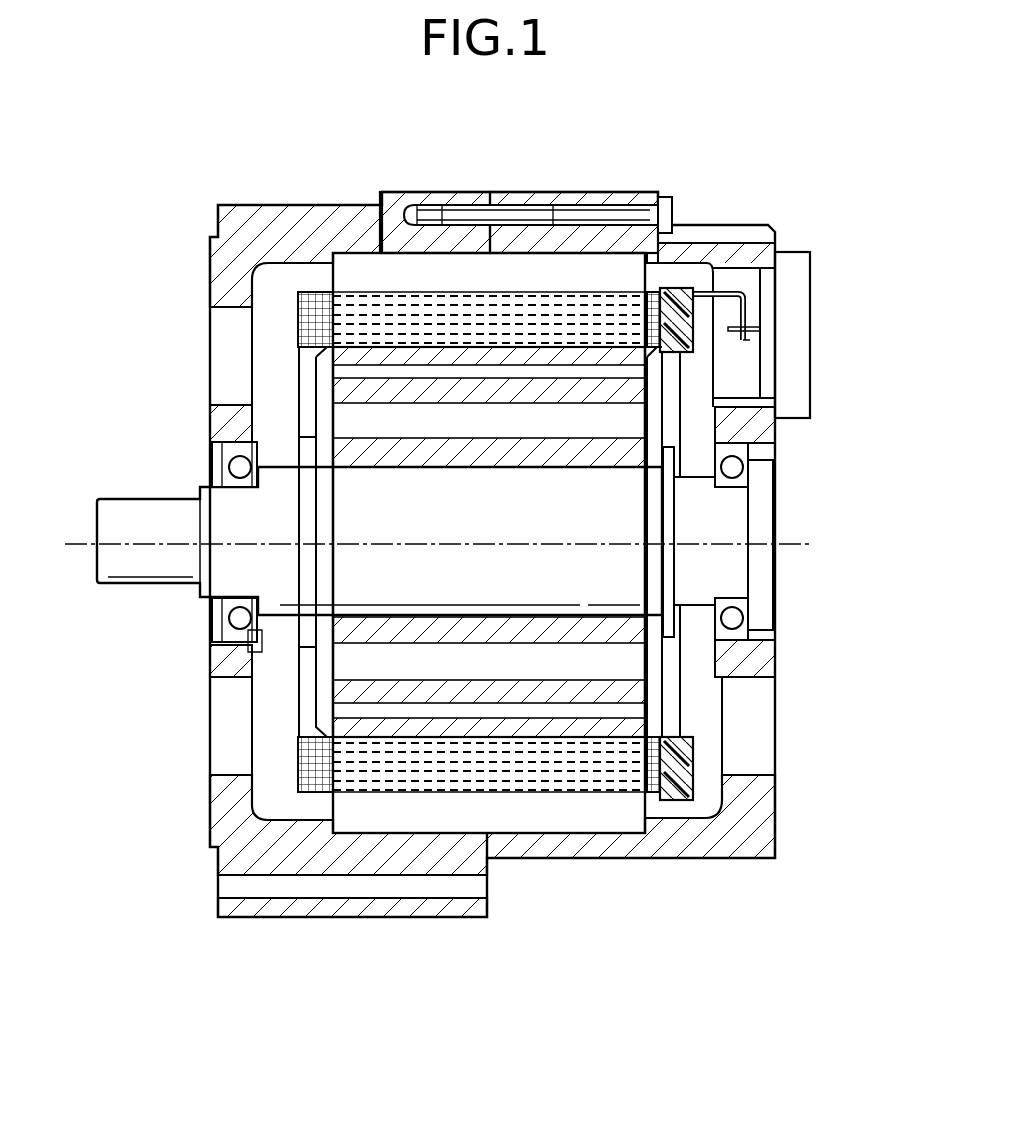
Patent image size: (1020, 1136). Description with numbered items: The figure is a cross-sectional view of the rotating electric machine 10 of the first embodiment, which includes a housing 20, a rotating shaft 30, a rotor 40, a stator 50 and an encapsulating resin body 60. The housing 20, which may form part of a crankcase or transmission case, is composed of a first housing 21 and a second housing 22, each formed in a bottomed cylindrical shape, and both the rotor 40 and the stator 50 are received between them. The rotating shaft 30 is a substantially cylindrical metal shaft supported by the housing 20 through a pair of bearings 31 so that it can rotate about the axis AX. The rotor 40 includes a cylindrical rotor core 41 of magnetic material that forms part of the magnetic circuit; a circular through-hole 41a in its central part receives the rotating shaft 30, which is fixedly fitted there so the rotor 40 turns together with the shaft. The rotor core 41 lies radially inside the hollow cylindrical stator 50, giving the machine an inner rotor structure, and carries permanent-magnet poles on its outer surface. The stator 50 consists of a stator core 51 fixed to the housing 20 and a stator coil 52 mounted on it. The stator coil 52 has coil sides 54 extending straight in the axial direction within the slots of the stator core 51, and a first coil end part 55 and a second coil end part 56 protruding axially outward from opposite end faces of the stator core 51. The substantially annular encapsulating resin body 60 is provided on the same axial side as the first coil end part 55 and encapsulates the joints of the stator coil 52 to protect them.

The rotating electric machine 10 is at (800, 203).
The housing 20 is at (345, 205).
The first housing 21 is at (395, 200).
The second housing 22 is at (533, 191).
The rotating shaft 30 is at (268, 565).
The bearings 31 is at (237, 633).
The rotor 40 is at (313, 405).
The rotor core 41 is at (403, 450).
The through-hole 41a is at (593, 467).
The stator 50 is at (333, 282).
The stator core 51 is at (348, 290).
The stator coil 52 is at (303, 322).
The coil sides 54 is at (466, 293).
The first coil end part 55 is at (652, 793).
The second coil end part 56 is at (306, 792).
The encapsulating resin body 60 is at (677, 302).
The axis AX is at (459, 545).